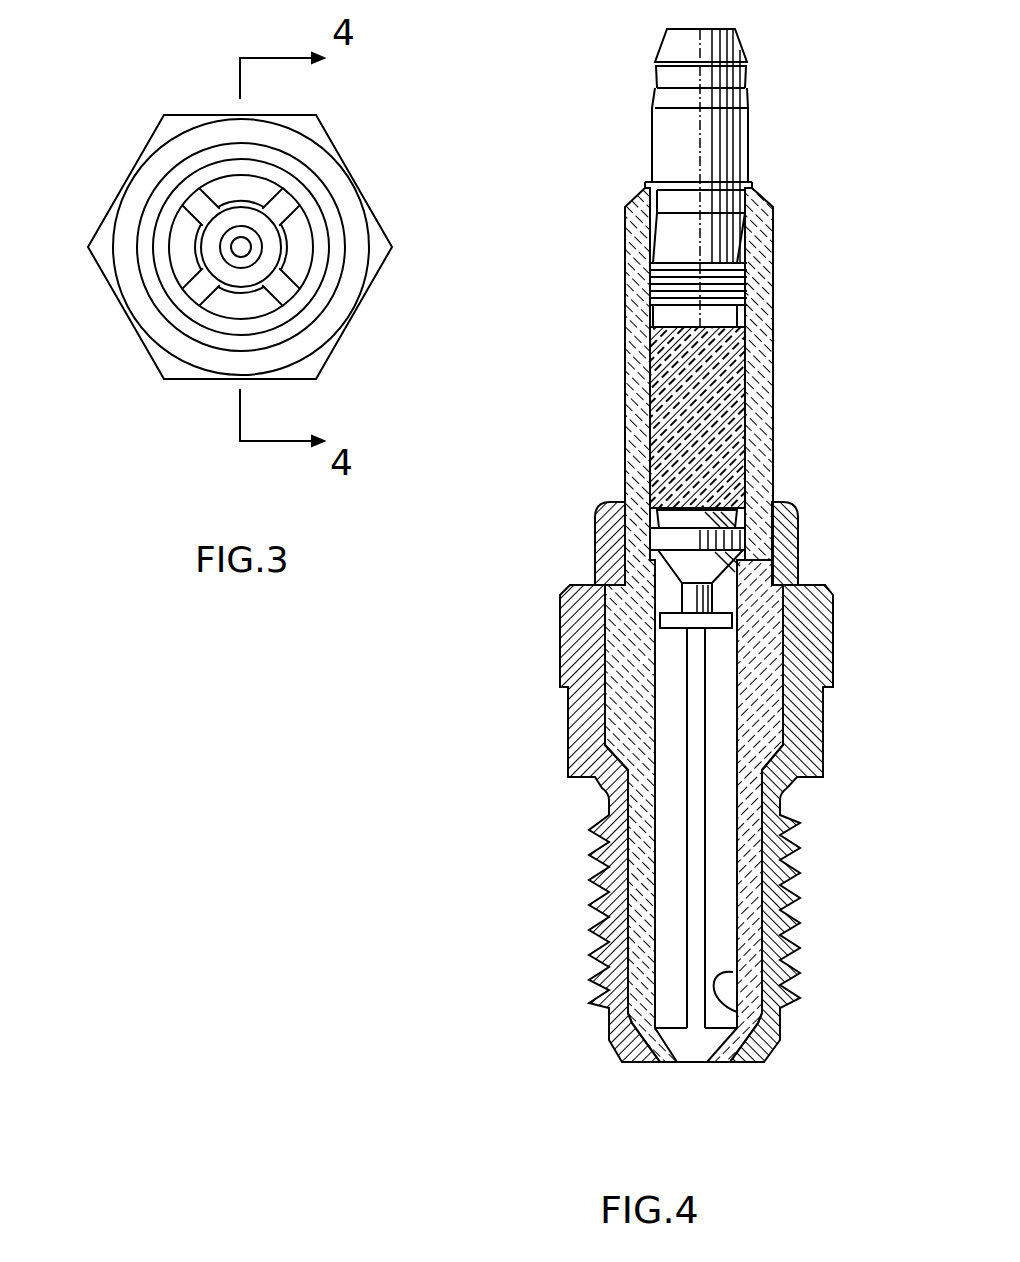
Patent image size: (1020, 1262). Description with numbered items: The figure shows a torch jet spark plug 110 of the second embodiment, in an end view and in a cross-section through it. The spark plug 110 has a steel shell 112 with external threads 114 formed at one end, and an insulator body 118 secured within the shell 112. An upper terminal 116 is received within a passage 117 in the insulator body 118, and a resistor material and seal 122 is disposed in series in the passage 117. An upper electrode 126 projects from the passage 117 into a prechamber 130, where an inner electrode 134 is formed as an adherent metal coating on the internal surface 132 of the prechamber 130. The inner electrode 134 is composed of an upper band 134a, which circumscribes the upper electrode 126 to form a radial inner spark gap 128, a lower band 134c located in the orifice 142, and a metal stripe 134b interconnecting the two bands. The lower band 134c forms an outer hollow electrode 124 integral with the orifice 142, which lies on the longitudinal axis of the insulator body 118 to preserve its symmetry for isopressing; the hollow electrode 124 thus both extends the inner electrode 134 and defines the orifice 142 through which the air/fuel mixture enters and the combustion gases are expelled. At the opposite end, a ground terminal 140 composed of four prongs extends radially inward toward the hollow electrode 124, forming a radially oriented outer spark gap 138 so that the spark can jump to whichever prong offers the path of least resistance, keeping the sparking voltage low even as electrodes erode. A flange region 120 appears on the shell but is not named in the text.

In FIG. 3, the spark plug 110 is at (368, 136).
In FIG. 4, the spark plug 110 is at (800, 302).
In FIG. 3, the steel shell 112 is at (177, 144).
In FIG. 4, the steel shell 112 is at (803, 578).
In FIG. 4, the external threads 114 is at (797, 903).
In FIG. 4, the upper terminal 116 is at (730, 132).
In FIG. 4, the passage 117 is at (650, 390).
In FIG. 3, the insulator body 118 is at (260, 226).
In FIG. 4, the insulator body 118 is at (627, 362).
In FIG. 4, the flange 120 is at (614, 501).
In FIG. 4, the resistor material and seal 122 is at (710, 384).
In FIG. 3, the hollow electrode 124 is at (204, 274).
In FIG. 4, the hollow electrode 124 is at (684, 1078).
In FIG. 4, the upper electrode 126 is at (747, 472).
In FIG. 4, the inner spark gap 128 is at (660, 592).
In FIG. 4, the prechamber 130 is at (675, 890).
In FIG. 4, the internal surface 132 is at (760, 1033).
In FIG. 4, the inner electrode 134 is at (708, 779).
In FIG. 4, the upper band 134a is at (668, 617).
In FIG. 4, the metal stripe 134b is at (697, 807).
In FIG. 3, the lower band 134c is at (221, 246).
In FIG. 4, the lower band 134c is at (710, 1063).
In FIG. 3, the outer spark gap 138 is at (228, 290).
In FIG. 4, the outer spark gap 138 is at (653, 1063).
In FIG. 3, the ground terminal 140 is at (244, 190).
In FIG. 4, the ground terminal 140 is at (640, 1062).
In FIG. 3, the orifice 142 is at (249, 257).
In FIG. 4, the orifice 142 is at (692, 1063).